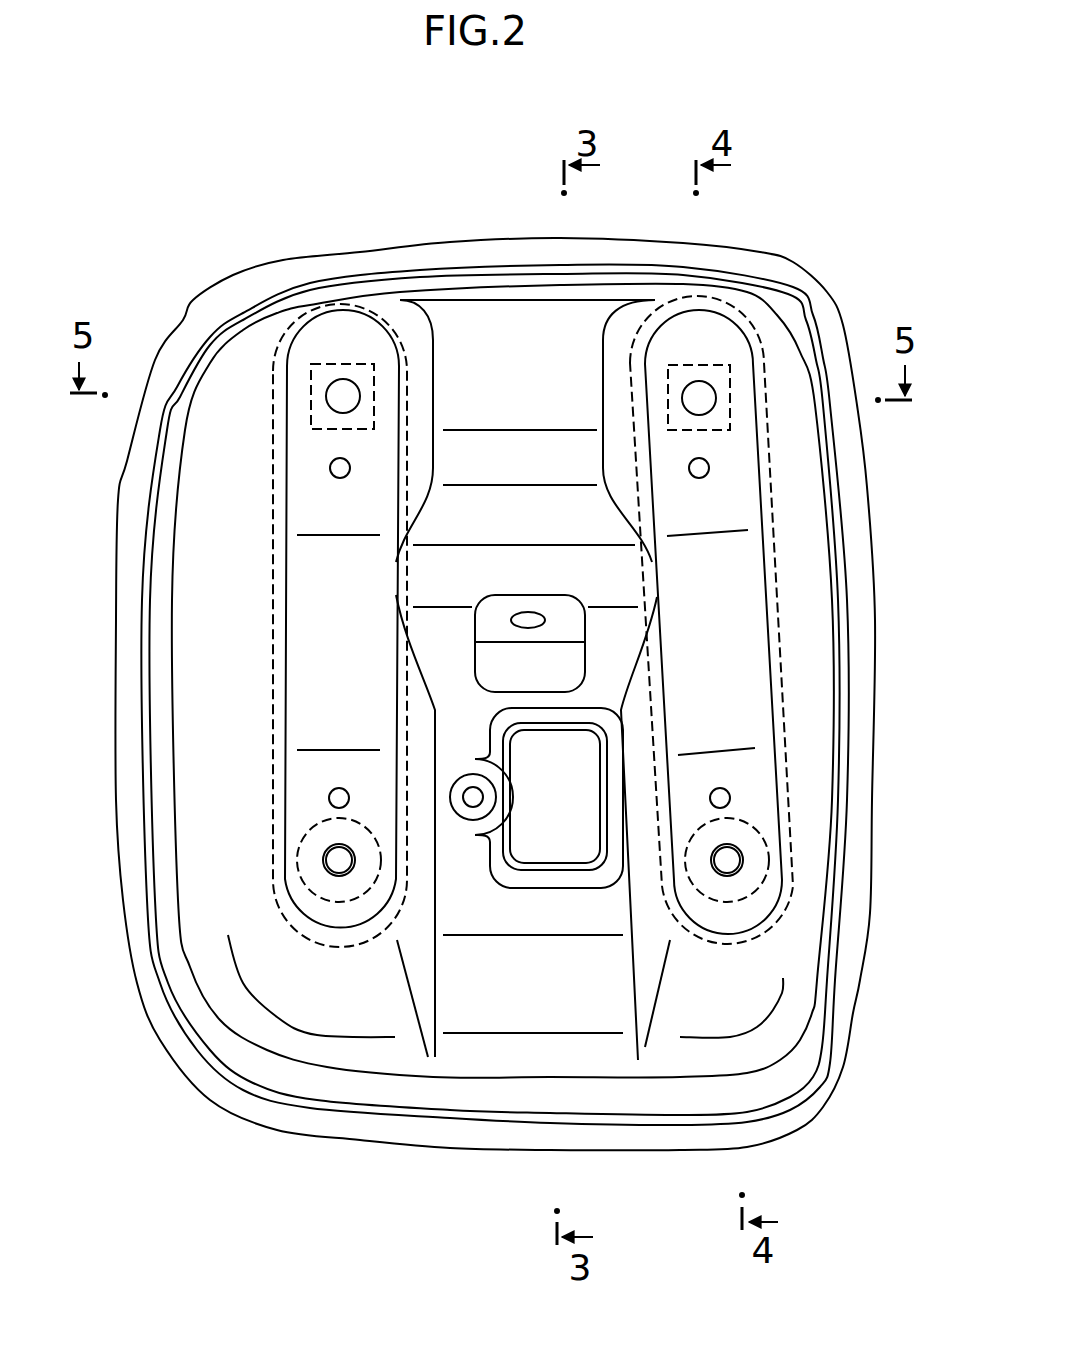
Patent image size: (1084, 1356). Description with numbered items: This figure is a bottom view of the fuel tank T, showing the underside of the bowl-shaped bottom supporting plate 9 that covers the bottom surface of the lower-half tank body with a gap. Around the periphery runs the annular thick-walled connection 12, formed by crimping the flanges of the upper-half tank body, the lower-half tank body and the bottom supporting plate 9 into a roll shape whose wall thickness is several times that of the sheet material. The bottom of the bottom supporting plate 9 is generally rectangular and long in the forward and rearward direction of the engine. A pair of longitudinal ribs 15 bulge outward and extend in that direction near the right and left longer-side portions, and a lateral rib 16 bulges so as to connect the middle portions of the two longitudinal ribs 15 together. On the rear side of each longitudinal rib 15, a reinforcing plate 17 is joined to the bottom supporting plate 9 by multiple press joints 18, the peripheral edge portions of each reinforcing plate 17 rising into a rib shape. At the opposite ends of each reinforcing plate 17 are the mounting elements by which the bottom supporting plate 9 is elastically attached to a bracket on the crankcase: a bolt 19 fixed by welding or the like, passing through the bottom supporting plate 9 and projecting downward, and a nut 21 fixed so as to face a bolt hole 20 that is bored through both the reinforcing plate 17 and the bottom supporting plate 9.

The fuel tank T is at (368, 243).
The bottom supporting plate 9 is at (812, 603).
The annular thick-walled connection 12 is at (858, 867).
The longitudinal ribs 15 is at (305, 635).
The lateral rib 16 is at (477, 580).
The reinforcing plates 17 is at (273, 577).
The press joints 18 is at (340, 478).
The bolt 19 is at (333, 860).
The bolt hole 20 is at (348, 403).
The nut 21 is at (367, 363).